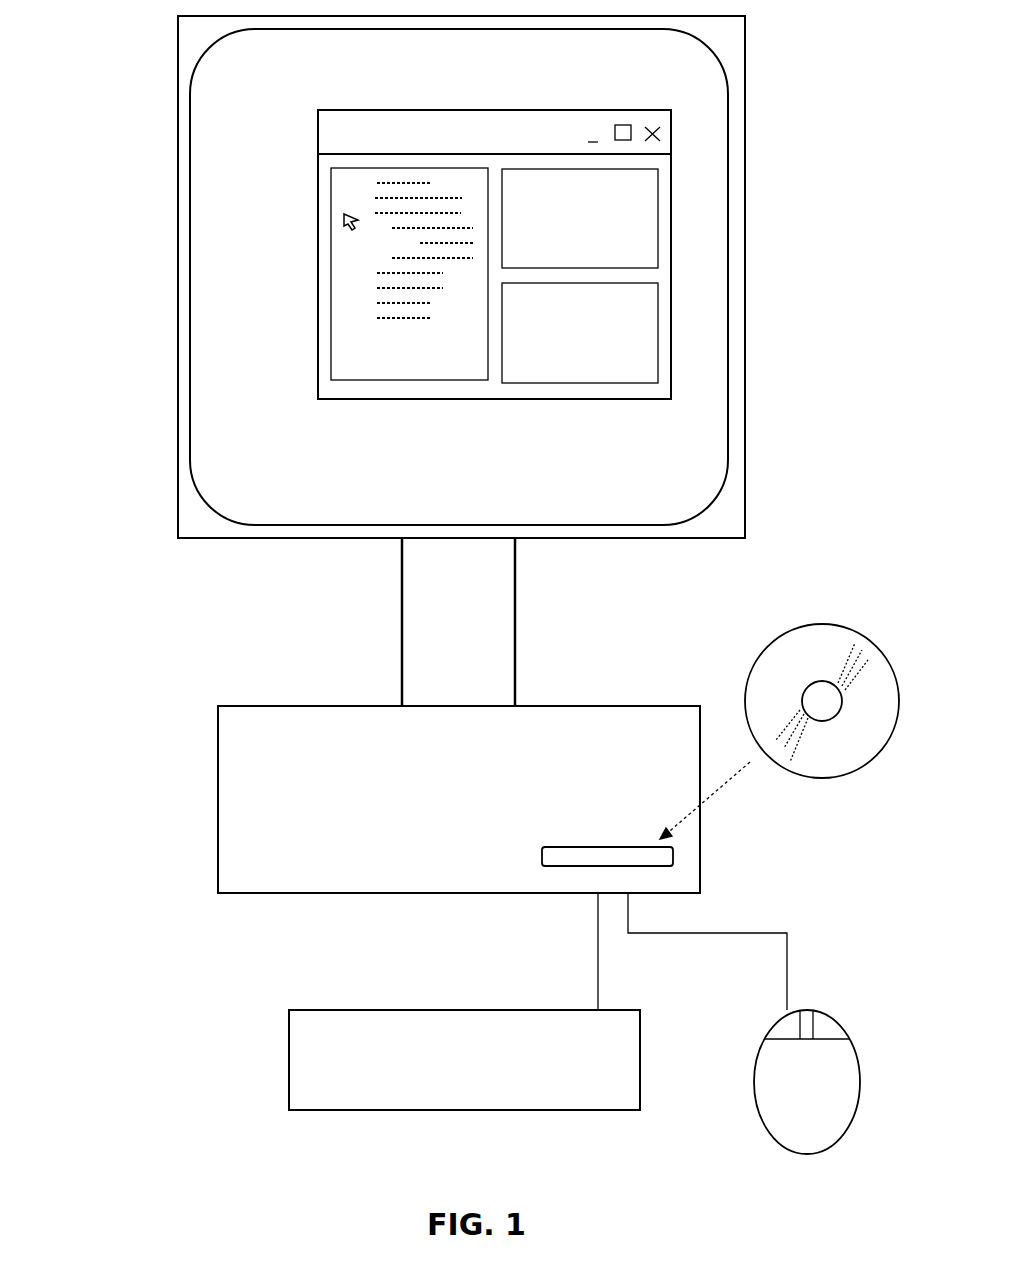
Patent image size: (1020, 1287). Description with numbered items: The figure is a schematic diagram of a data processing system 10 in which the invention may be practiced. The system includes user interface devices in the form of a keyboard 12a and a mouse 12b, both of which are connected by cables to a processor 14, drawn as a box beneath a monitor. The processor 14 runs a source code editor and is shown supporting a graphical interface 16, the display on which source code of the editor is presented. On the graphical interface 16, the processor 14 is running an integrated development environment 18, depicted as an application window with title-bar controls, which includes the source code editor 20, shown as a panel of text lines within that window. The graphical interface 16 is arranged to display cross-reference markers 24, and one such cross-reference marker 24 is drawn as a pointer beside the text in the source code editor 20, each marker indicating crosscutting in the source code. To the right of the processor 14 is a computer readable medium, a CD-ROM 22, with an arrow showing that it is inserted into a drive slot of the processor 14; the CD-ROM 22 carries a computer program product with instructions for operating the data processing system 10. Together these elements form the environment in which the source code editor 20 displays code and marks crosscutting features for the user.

The data processing system 10 is at (138, 618).
The keyboard 12a is at (289, 1058).
The mouse 12b is at (759, 1125).
The processor 14 is at (218, 782).
The graphical interface 16 is at (746, 460).
The integrated development environment 18 is at (672, 304).
The source code editor 20 is at (331, 332).
The CD-ROM 22 is at (848, 628).
The cross-reference marker 24 is at (344, 222).